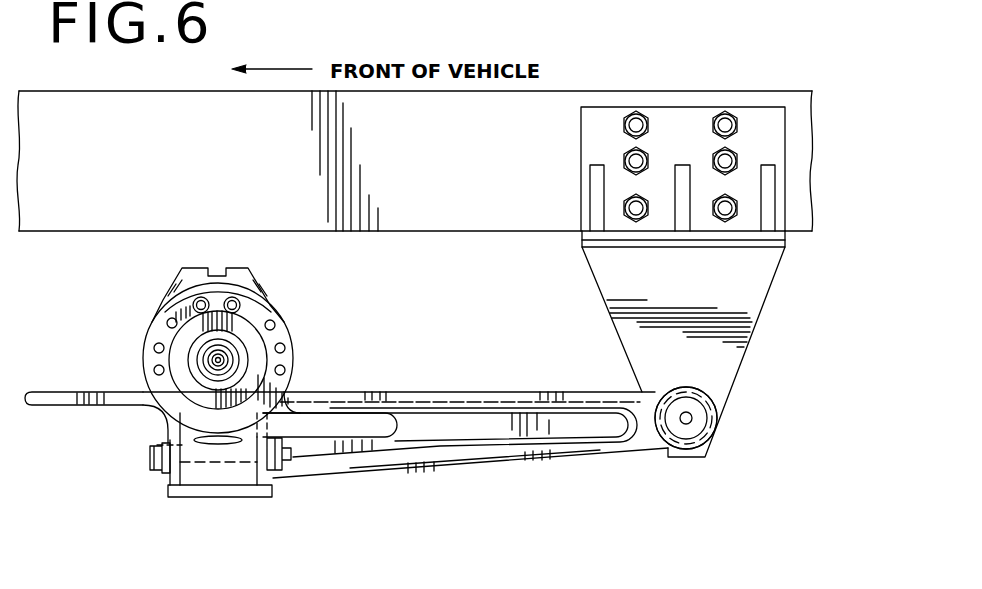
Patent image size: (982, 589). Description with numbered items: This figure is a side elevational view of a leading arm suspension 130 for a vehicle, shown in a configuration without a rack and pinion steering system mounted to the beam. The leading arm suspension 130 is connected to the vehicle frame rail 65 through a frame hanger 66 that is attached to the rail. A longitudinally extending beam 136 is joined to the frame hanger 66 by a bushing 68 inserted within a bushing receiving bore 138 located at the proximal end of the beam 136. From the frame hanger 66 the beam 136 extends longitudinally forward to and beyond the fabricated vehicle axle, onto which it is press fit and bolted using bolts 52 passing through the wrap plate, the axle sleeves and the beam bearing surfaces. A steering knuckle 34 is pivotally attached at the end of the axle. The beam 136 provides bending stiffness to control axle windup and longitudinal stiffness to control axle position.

The vehicle frame rail 65 is at (137, 105).
The frame hanger 66 is at (738, 310).
The bushing 68 is at (697, 428).
The bushing receiving bore 138 is at (708, 405).
The beam 136 is at (445, 392).
The leading arm suspension 130 is at (211, 347).
The steering knuckle 34 is at (270, 312).
The bolt 52 is at (152, 458).